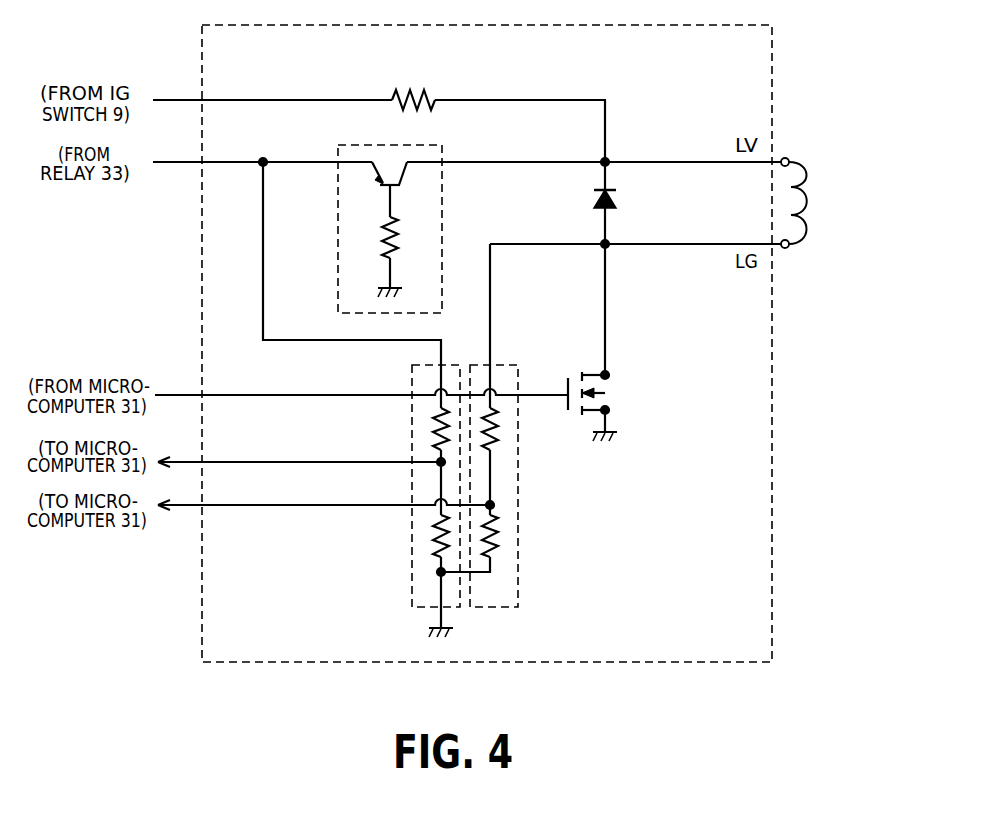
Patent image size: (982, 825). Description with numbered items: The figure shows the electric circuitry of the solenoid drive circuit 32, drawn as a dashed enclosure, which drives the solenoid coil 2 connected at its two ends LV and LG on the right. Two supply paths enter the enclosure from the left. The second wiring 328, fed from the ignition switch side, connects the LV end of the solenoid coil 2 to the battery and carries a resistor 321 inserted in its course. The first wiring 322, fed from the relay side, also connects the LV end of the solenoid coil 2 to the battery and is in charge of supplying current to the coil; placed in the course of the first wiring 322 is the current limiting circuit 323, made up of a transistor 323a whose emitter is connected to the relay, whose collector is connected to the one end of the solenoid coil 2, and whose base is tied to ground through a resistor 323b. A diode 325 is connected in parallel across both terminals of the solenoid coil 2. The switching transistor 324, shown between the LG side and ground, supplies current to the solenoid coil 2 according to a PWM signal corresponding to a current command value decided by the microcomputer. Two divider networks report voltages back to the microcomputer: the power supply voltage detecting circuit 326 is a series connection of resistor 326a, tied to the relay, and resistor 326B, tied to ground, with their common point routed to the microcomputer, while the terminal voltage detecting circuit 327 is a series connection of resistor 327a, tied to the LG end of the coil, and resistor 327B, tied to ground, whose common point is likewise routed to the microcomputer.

The solenoid coil 2 is at (810, 235).
The solenoid drive circuit 32 is at (775, 607).
The resistor 321 is at (415, 89).
The first wiring 322 is at (509, 160).
The current limiting circuit 323 is at (392, 229).
The transistor 323a is at (378, 186).
The resistor 323b is at (386, 238).
The switching transistor 324 is at (608, 393).
The diode 325 is at (616, 193).
The power supply voltage detecting circuit 326 is at (398, 484).
The resistor 326a is at (433, 428).
The resistor 326B is at (433, 538).
The terminal voltage detecting circuit 327 is at (534, 472).
The resistor 327a is at (498, 437).
The resistor 327B is at (498, 538).
The second wiring 328 is at (507, 98).